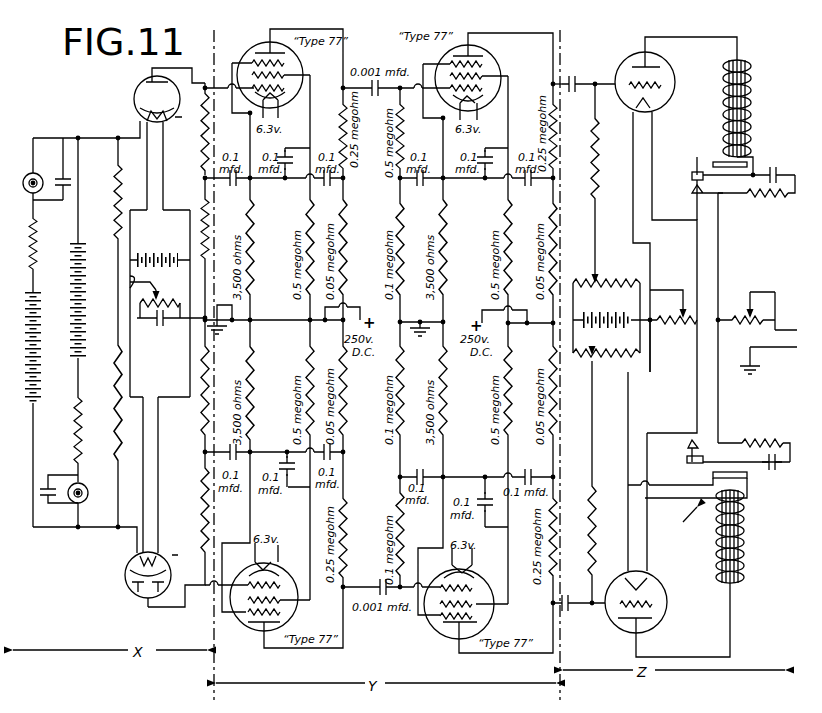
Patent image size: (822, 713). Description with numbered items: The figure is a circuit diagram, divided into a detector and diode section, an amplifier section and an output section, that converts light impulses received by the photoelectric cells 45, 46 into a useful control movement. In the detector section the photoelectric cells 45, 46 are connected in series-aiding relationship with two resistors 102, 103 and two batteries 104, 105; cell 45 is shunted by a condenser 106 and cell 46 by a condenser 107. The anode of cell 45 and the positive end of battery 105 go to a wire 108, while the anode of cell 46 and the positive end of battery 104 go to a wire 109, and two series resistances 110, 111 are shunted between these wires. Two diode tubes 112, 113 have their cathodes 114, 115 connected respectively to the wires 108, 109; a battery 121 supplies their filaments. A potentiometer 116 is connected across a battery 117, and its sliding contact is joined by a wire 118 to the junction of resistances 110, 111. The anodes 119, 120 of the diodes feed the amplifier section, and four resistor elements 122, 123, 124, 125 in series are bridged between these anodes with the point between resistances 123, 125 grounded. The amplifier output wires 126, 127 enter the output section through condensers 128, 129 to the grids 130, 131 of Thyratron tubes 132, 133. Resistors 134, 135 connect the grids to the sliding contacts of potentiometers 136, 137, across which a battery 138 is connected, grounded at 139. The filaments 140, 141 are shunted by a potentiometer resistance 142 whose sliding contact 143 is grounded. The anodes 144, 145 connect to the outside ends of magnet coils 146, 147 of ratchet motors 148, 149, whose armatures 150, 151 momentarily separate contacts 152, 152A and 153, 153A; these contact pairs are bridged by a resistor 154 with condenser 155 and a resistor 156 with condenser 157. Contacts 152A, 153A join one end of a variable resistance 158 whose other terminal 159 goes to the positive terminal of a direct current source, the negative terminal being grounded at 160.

The photoelectric cell 46 is at (28, 174).
The condenser 107 is at (64, 172).
The wire 109 is at (93, 137).
The resistor 103 is at (37, 240).
The battery 105 is at (38, 372).
The wire 108 is at (68, 530).
The battery 104 is at (82, 309).
The resistor 102 is at (80, 438).
The photoelectric cell 45 is at (89, 491).
The condenser 106 is at (48, 478).
The resistance 111 is at (112, 238).
The resistance 110 is at (112, 396).
The diode tube 113 is at (135, 97).
The anode 120 is at (146, 80).
The cathode 115 is at (146, 114).
The resistor element 124 is at (201, 140).
The resistor element 125 is at (201, 210).
The battery 121 is at (165, 252).
The wire 118 is at (127, 283).
The potentiometer 116 is at (160, 297).
The battery 117 is at (163, 327).
The resistor element 123 is at (201, 388).
The resistor element 122 is at (201, 497).
The diode tube 112 is at (128, 578).
The cathode 114 is at (134, 563).
The anode 119 is at (138, 594).
The output wire 127 is at (571, 72).
The condenser 129 is at (586, 80).
The grid 131 is at (626, 60).
The anode 145 is at (656, 66).
The Thyratron tube 133 is at (664, 80).
The filament 141 is at (632, 108).
The filament 140 is at (626, 565).
The magnet coil 147 is at (746, 100).
The resistor 135 is at (592, 160).
The ratchet motor 149 is at (700, 150).
The armature 151 is at (711, 164).
The contact 153 is at (691, 178).
The contact 153A is at (698, 194).
The condenser 157 is at (774, 165).
The resistor 156 is at (762, 197).
The potentiometer 137 is at (617, 280).
The potentiometer 136 is at (583, 356).
The battery 138 is at (625, 310).
The sliding contact 143 is at (683, 288).
The potentiometer resistance 142 is at (686, 318).
The ground connection 139 is at (652, 344).
The variable resistance 158 is at (740, 324).
The terminal 159 is at (777, 290).
The ground connection 160 is at (756, 362).
The contact 152A is at (688, 446).
The contact 152 is at (690, 463).
The resistor 154 is at (768, 440).
The condenser 155 is at (772, 472).
The armature 150 is at (744, 482).
The ratchet motor 148 is at (683, 520).
The magnet coil 146 is at (743, 548).
The resistor 134 is at (589, 518).
The Thyratron tube 132 is at (652, 585).
The anode 144 is at (653, 623).
The grid 130 is at (616, 617).
The condenser 128 is at (578, 584).
The output wire 126 is at (558, 612).